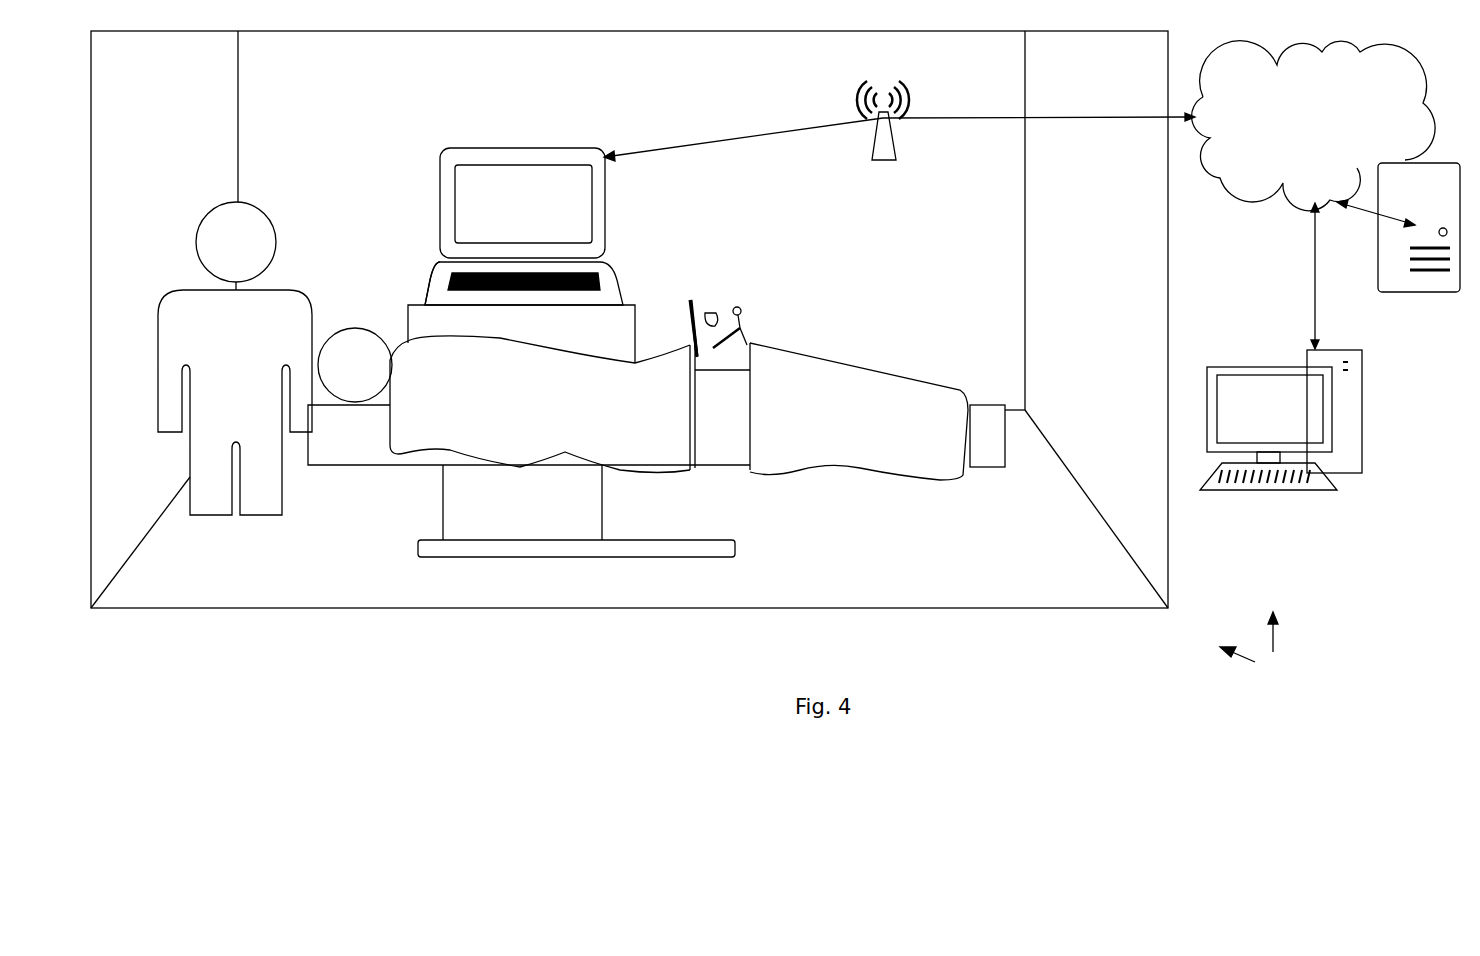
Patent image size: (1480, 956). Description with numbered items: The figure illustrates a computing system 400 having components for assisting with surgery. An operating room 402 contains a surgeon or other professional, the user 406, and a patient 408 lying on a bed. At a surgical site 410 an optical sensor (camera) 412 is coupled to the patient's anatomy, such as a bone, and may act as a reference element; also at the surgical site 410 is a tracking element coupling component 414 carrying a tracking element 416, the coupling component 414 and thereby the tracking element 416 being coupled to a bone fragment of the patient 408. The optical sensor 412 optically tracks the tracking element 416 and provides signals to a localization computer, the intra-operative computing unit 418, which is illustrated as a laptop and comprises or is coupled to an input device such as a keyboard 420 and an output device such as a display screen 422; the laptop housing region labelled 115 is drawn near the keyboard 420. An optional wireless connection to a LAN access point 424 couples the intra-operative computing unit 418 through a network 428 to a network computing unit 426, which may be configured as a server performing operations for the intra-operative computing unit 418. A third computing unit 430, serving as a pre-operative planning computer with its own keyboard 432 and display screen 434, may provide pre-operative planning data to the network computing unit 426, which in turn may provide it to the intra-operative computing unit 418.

The computing device housing 115 is at (440, 262).
The computing system 400 is at (1260, 645).
The operating room 402 is at (1025, 565).
The surgeon or other professional (user) 406 is at (256, 372).
The patient 408 is at (545, 407).
The surgical site 410 is at (724, 296).
The optical sensor (camera) 412 is at (690, 312).
The tracking element coupling component 414 is at (743, 330).
The tracking element 416 is at (741, 311).
The intra-operative computing unit 418 is at (526, 226).
The keyboard 420 is at (467, 265).
The display screen 422 is at (550, 218).
The LAN access point 424 is at (895, 150).
The network computing unit 426 is at (1378, 250).
The network 428 is at (1334, 129).
The third computing unit 430 is at (1360, 343).
The keyboard 432 is at (1333, 477).
The display screen 434 is at (1297, 418).